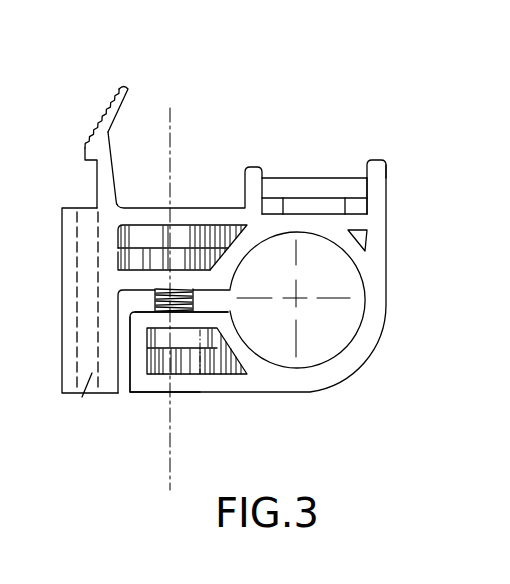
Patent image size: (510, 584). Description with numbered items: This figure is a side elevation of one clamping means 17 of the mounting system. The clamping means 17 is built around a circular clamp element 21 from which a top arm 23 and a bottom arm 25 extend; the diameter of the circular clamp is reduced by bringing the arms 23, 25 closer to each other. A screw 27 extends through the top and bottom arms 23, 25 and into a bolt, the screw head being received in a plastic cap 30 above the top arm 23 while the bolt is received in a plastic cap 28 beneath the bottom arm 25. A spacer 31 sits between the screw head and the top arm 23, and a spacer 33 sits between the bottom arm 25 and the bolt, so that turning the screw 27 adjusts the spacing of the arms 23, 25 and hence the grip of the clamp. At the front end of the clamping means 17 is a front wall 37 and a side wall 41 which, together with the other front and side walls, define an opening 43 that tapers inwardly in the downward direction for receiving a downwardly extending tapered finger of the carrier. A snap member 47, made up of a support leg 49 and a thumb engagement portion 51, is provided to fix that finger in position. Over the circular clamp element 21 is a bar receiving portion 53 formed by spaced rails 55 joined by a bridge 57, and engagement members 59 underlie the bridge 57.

The clamping means 17 is at (369, 406).
The circular clamp element 21 is at (346, 328).
The top arm 23 is at (208, 284).
The bottom arm 25 is at (208, 320).
The screw 27 is at (150, 297).
The plastic cap 28 is at (233, 373).
The plastic cap 30 is at (178, 258).
The spacer 31 is at (193, 243).
The spacer 33 is at (163, 342).
The front wall 37 is at (61, 228).
The side wall 41 is at (82, 397).
The opening 43 is at (83, 212).
The snap member 47 is at (133, 130).
The support leg 49 is at (104, 192).
The thumb engagement portion 51 is at (110, 97).
The bar receiving portion 53 is at (399, 153).
The rails 55 is at (251, 172).
The bridge 57 is at (315, 187).
The engagement members 59 is at (357, 205).